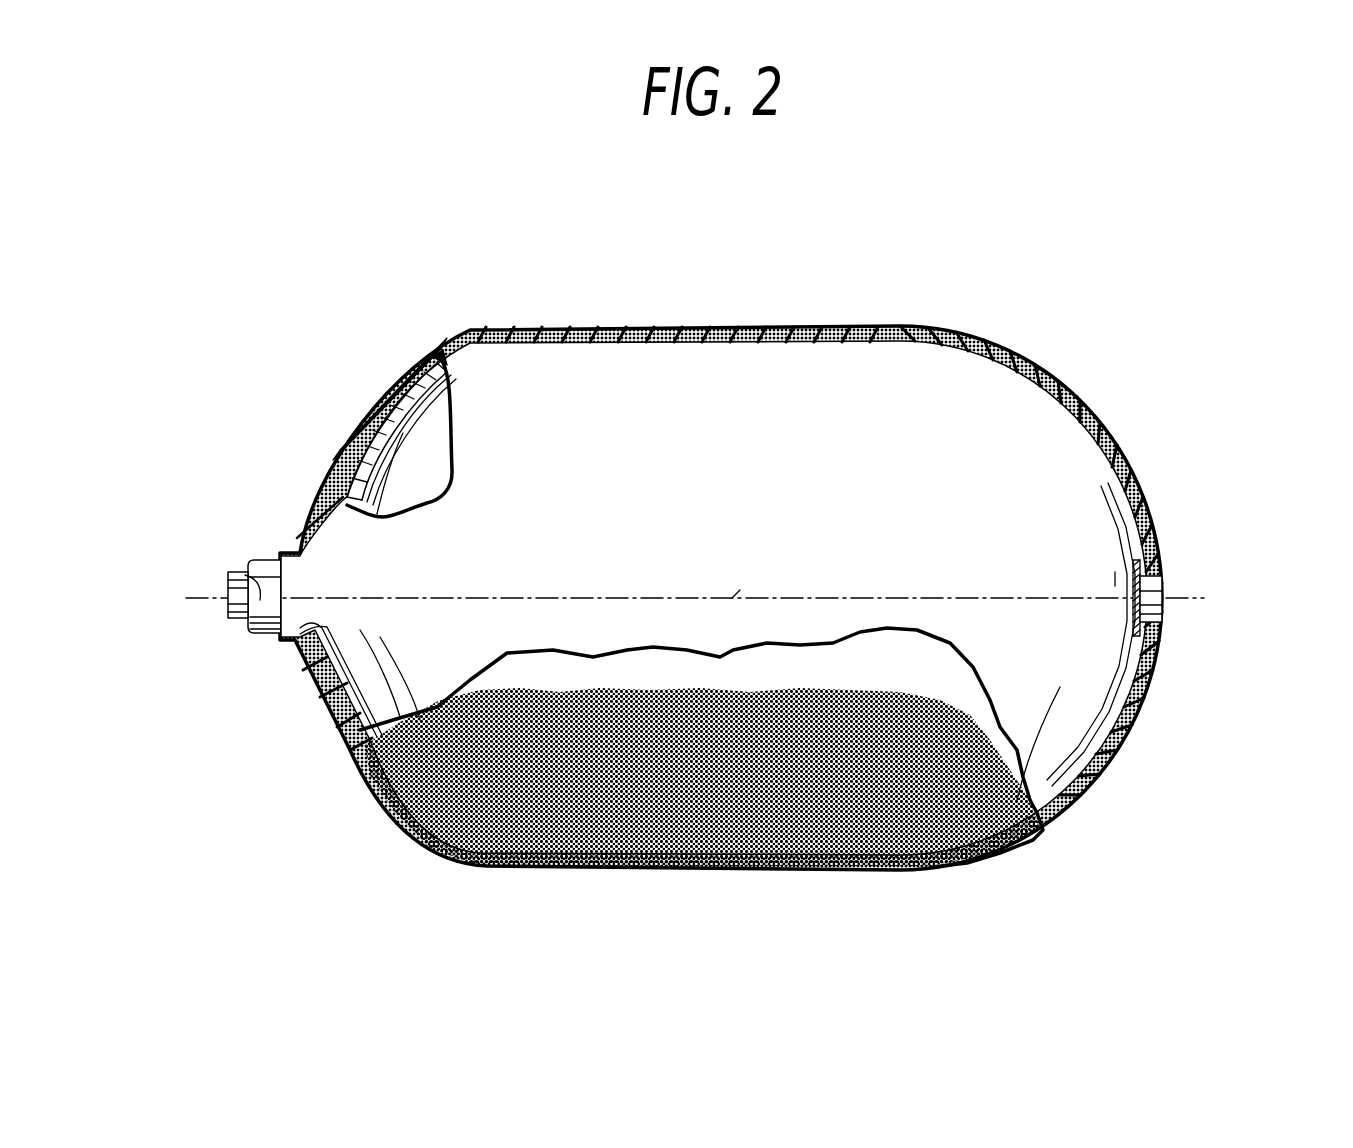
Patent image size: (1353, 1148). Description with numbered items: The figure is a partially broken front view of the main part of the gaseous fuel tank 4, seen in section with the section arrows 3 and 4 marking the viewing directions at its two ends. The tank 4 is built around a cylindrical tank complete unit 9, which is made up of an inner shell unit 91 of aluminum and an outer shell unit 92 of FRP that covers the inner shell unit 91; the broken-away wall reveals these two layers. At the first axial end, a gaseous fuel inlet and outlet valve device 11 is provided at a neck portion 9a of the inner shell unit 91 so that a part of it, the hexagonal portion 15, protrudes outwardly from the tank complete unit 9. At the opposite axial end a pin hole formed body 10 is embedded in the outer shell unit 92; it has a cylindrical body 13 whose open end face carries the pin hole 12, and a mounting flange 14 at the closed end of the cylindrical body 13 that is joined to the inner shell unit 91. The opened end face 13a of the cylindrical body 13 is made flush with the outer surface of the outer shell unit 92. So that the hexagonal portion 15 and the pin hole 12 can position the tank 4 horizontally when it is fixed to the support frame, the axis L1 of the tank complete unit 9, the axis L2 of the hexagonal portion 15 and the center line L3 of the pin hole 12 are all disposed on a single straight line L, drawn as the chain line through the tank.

The section line 3-3 view arrow 3 is at (172, 600).
The gaseous fuel tank 4 is at (1058, 352).
The tank complete unit 9 is at (830, 242).
The inner shell unit 91 is at (740, 370).
The outer shell unit 92 is at (800, 333).
The neck portion 9a is at (305, 625).
The pin hole formed body 10 is at (1178, 571).
The gaseous fuel inlet and outlet valve device 11 is at (258, 538).
The pin hole 12 is at (1163, 598).
The cylindrical body 13 is at (1150, 577).
The opened end face 13a is at (1162, 608).
The mounting flange 14 is at (1135, 636).
The hexagonal portion 15 is at (262, 630).
The single straight line L is at (617, 590).
The axis of the tank complete unit L1 is at (732, 598).
The axis of the hexagonal portion L2 is at (240, 578).
The center line of the pin hole L3 is at (1130, 591).